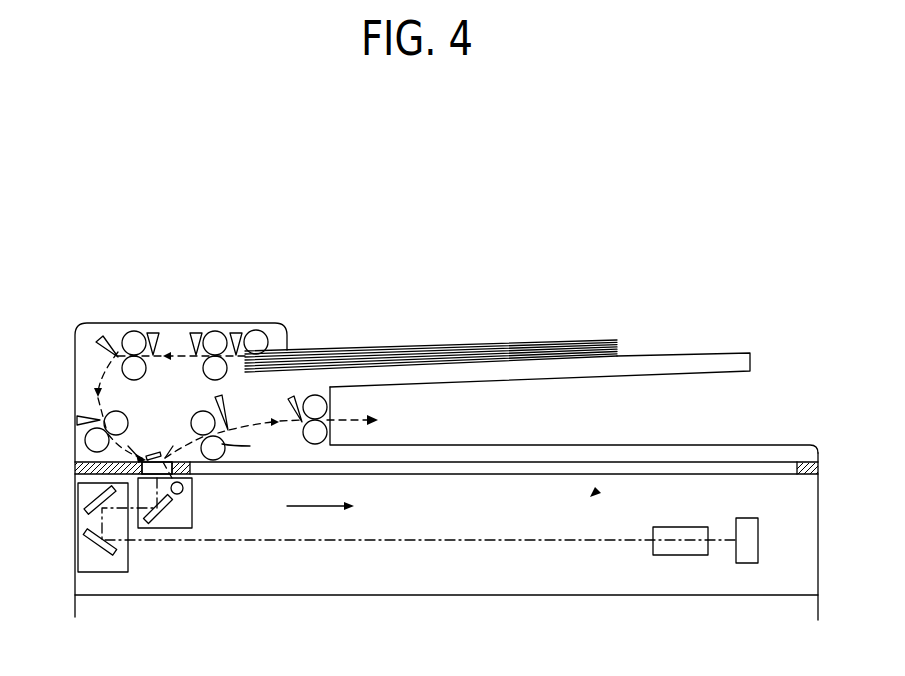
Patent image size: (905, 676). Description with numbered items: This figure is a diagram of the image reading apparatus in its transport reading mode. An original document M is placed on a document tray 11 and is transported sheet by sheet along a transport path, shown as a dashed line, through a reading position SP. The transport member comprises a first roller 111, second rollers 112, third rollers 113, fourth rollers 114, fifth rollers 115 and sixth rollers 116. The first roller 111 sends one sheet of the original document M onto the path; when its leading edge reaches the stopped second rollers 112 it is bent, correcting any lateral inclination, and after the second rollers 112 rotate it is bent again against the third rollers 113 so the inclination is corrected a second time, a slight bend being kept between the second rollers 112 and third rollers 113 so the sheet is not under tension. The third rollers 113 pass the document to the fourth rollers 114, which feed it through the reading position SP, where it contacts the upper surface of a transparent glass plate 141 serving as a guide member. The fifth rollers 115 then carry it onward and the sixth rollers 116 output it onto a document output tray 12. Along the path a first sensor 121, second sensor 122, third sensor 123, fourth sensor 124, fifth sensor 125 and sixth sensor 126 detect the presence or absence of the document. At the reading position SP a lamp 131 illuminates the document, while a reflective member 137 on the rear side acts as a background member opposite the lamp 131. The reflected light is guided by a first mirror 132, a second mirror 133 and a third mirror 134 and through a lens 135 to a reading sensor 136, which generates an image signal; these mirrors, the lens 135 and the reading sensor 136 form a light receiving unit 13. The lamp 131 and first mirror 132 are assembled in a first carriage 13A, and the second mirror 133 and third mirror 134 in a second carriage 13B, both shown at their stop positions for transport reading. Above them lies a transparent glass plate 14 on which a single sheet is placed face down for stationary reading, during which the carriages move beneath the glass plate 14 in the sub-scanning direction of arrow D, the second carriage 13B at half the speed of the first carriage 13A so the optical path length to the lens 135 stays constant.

The document tray 11 is at (675, 355).
The document output tray 12 is at (673, 445).
The light receiving unit 13 is at (597, 492).
The first carriage 13A is at (193, 525).
The second carriage 13B is at (128, 534).
The transparent glass plate 14 is at (743, 462).
The original document M is at (405, 348).
The direction of arrow D is at (328, 507).
The reading position SP is at (150, 437).
The first roller 111 is at (260, 335).
The second rollers 112 is at (215, 367).
The third rollers 113 is at (133, 367).
The fourth rollers 114 is at (120, 420).
The fifth rollers 115 is at (222, 444).
The sixth rollers 116 is at (303, 407).
The first sensor 121 is at (237, 330).
The second sensor 122 is at (196, 332).
The third sensor 123 is at (155, 330).
The fourth sensor 124 is at (100, 338).
The fifth sensor 125 is at (86, 414).
The sixth sensor 126 is at (220, 398).
The lamp 131 is at (184, 488).
The first mirror 132 is at (172, 497).
The second mirror 133 is at (112, 489).
The third mirror 134 is at (114, 553).
The lens 135 is at (683, 526).
The reading sensor 136 is at (747, 518).
The reflective member 137 is at (170, 458).
The transparent glass plate 141 is at (175, 470).